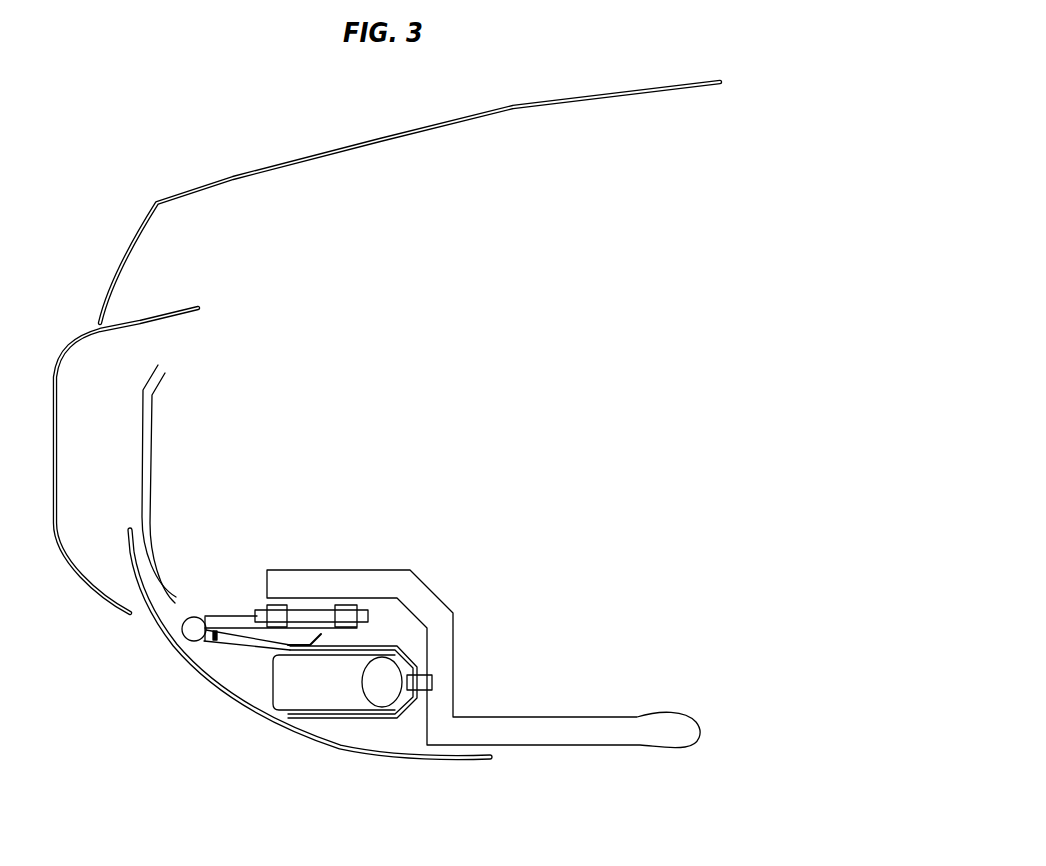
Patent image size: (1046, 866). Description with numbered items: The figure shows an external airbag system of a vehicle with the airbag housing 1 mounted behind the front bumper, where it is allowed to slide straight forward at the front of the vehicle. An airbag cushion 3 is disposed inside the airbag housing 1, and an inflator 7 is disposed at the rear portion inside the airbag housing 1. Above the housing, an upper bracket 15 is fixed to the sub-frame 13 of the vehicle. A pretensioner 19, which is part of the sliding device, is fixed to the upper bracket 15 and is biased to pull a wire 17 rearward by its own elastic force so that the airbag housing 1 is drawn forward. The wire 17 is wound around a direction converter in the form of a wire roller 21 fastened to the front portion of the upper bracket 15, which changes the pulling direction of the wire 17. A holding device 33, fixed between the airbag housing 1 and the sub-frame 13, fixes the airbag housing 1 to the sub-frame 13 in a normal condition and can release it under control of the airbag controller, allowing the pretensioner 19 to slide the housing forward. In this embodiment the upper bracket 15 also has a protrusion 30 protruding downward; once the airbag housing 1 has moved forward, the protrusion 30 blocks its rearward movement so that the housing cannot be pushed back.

The airbag housing 1 is at (325, 722).
The airbag cushion 3 is at (272, 683).
The inflator 7 is at (382, 692).
The sub-frame 13 is at (548, 715).
The upper bracket 15 is at (235, 632).
The wire 17 is at (227, 615).
The pretensioner 19 is at (316, 608).
The wire roller 21 is at (194, 629).
The protrusion 30 is at (213, 640).
The holding device 33 is at (420, 693).